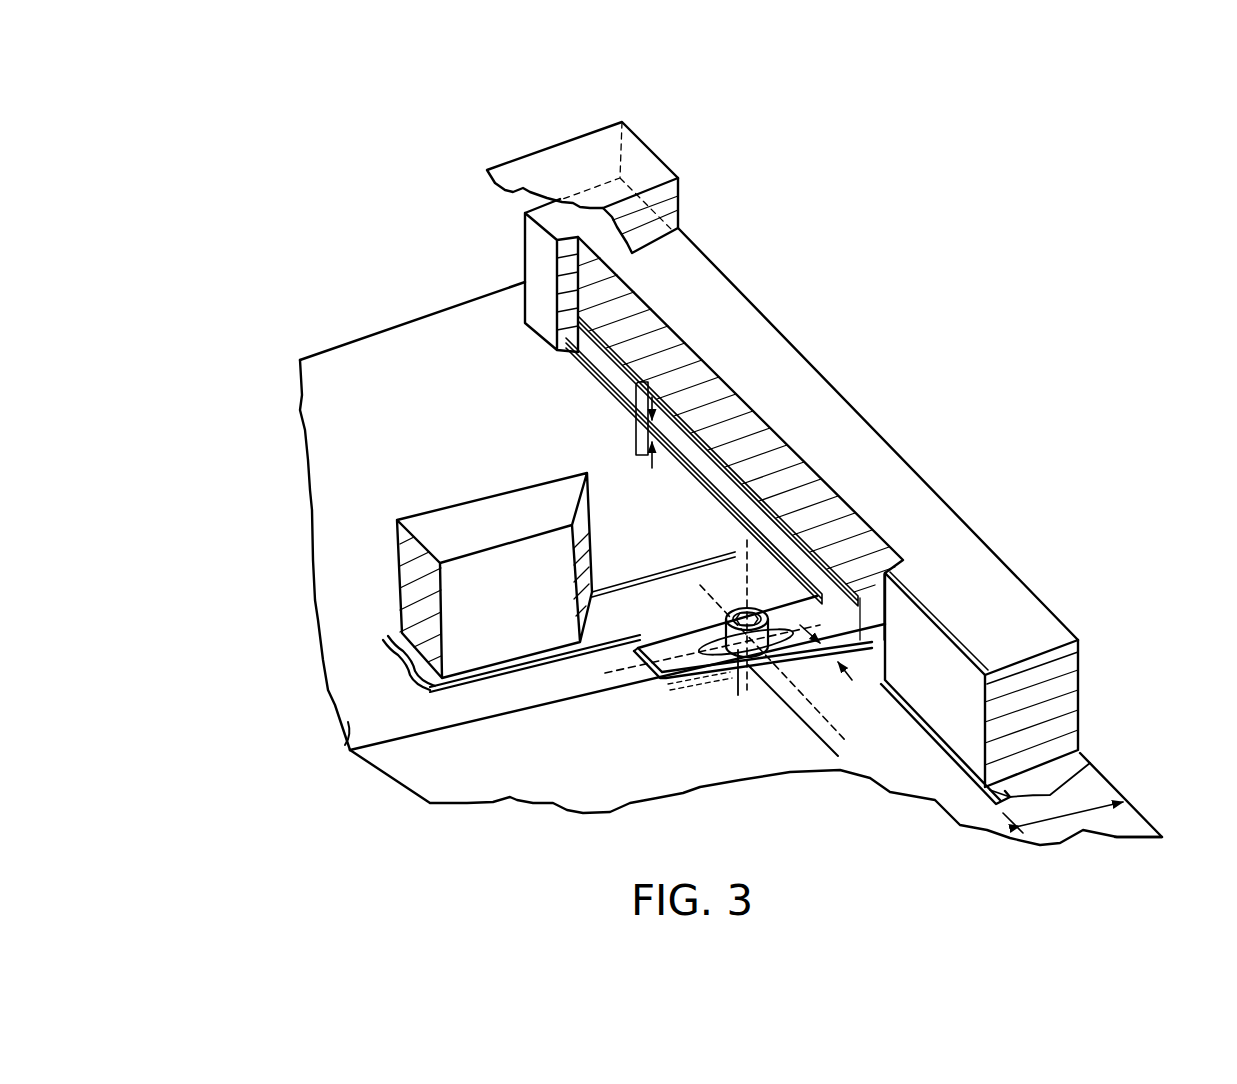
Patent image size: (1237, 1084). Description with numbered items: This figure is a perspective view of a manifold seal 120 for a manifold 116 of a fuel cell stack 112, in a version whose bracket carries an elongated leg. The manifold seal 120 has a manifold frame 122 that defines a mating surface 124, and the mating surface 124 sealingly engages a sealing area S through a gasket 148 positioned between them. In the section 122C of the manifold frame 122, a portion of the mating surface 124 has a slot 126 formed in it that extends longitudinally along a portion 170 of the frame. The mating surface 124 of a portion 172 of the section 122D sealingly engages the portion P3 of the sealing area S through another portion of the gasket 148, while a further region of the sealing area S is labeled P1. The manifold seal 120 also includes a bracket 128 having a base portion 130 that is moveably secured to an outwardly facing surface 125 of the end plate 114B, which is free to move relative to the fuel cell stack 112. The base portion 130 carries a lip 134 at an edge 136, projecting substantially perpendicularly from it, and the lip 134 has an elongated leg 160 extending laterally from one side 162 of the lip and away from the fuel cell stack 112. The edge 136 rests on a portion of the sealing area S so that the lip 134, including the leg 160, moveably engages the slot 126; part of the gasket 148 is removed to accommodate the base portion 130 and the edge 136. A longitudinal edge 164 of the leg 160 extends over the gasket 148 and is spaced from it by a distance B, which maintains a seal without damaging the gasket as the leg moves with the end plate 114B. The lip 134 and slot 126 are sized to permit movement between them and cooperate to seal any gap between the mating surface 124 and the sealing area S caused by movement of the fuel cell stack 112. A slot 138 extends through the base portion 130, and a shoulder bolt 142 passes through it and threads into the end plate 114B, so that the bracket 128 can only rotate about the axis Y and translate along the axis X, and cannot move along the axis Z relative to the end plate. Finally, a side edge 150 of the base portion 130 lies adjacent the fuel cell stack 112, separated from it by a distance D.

The fuel cell stack 112 is at (455, 763).
The end plate 114B is at (344, 362).
The manifold 116 is at (655, 108).
The manifold seal 120 is at (1036, 380).
The manifold frame 122 is at (988, 582).
The section of the manifold frame 122C is at (676, 252).
The section of the manifold frame 122D is at (497, 509).
The mating surface 124 is at (510, 670).
The outwardly facing surface 125 is at (350, 750).
The slot 126 is at (622, 368).
The bracket 128 is at (682, 640).
The base portion 130 is at (628, 672).
The lip 134 is at (849, 602).
The edge 136 is at (853, 662).
The slot 138 is at (700, 655).
The shoulder bolt 142 is at (738, 693).
The gasket 148 is at (616, 374).
The side edge 150 is at (739, 693).
The elongated leg 160 is at (740, 460).
The side 162 is at (805, 570).
The longitudinal edge 164 is at (680, 455).
The portion of the manifold frame 170 is at (704, 450).
The portion of section 122D 172 is at (450, 528).
The distance B is at (650, 450).
The distance D is at (815, 685).
The axis X is at (645, 682).
The axis Y is at (747, 572).
The axis Z is at (828, 753).
The sealing area S is at (365, 416).
The first plane P1 is at (1117, 825).
The portion of the sealing area P3 is at (365, 457).